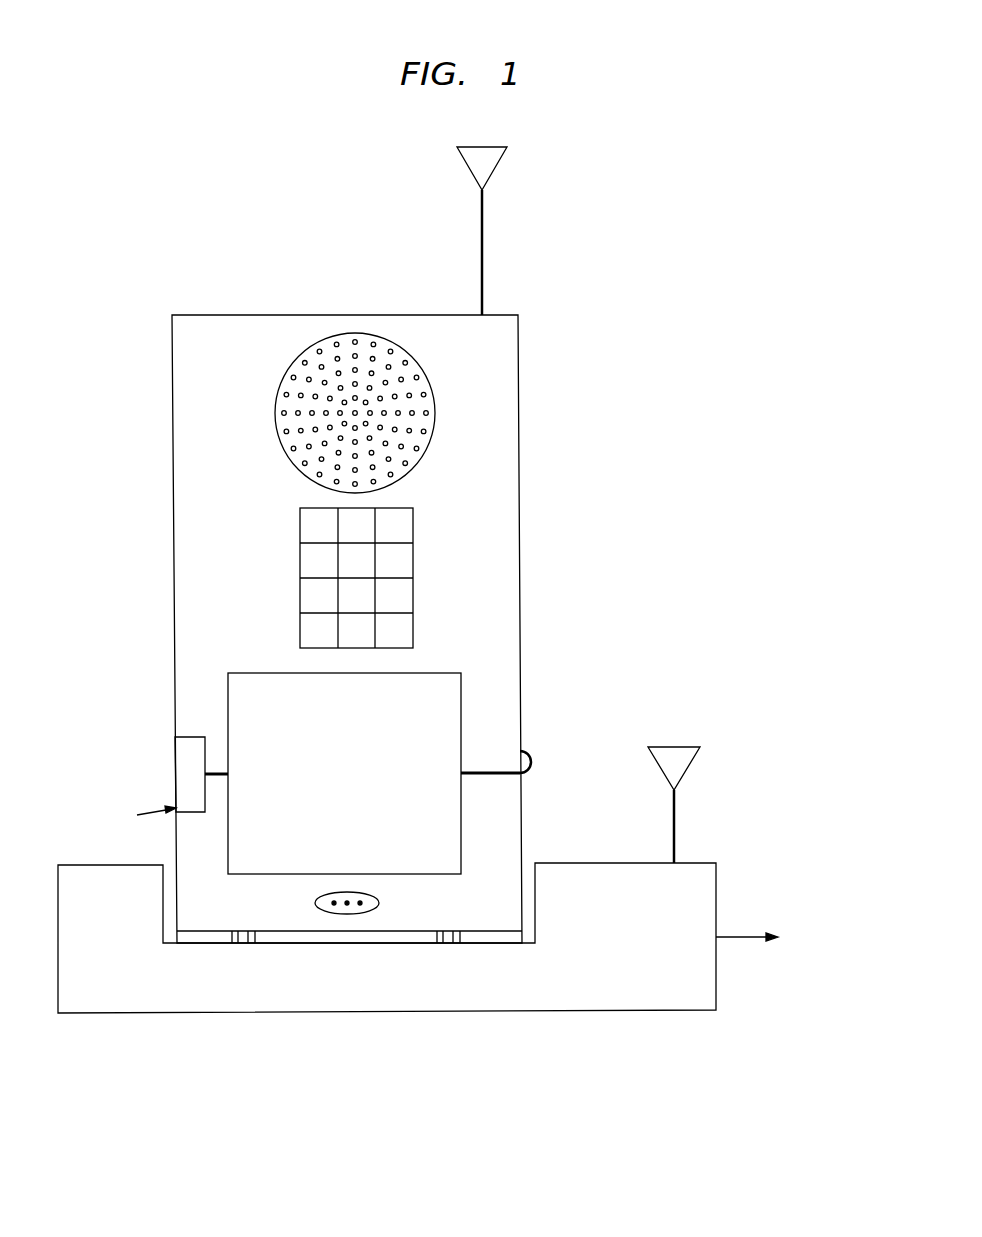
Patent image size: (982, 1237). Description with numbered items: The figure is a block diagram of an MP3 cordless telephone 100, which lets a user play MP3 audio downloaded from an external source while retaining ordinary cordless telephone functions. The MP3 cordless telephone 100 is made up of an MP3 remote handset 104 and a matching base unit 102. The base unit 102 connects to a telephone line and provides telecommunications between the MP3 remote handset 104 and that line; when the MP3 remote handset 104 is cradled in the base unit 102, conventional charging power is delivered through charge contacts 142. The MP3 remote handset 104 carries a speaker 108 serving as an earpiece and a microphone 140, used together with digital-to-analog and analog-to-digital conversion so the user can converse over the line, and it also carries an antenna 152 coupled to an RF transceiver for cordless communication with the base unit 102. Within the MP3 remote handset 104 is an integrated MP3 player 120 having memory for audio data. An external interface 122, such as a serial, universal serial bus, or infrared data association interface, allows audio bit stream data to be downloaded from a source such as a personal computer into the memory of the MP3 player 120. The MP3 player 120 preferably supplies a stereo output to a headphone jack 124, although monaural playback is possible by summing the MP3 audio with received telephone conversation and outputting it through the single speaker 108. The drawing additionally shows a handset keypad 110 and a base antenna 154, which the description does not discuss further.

The MP3 cordless telephone 100 is at (621, 535).
The base unit 102 is at (524, 1012).
The MP3 remote handset 104 is at (521, 622).
The speaker 108 is at (436, 413).
The keypad 110 is at (414, 527).
The MP3 player 120 is at (250, 672).
The external interface 122 is at (176, 737).
The headphone jack 124 is at (532, 763).
The microphone 140 is at (379, 904).
The charge contacts 142 is at (245, 945).
The antenna 152 is at (484, 253).
The base antenna 154 is at (676, 830).